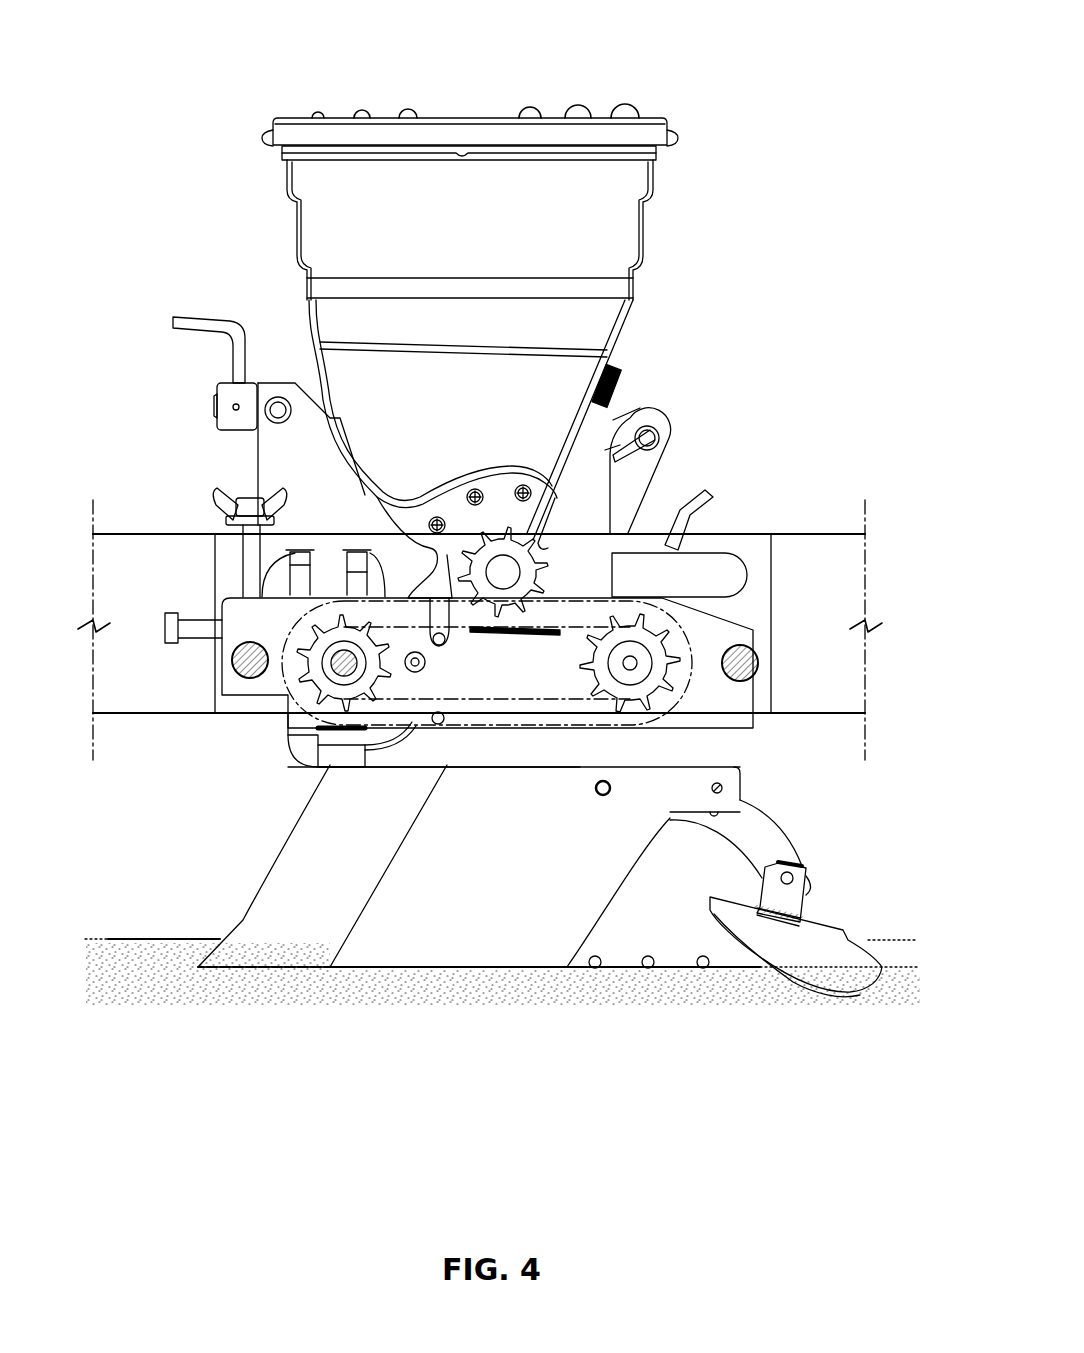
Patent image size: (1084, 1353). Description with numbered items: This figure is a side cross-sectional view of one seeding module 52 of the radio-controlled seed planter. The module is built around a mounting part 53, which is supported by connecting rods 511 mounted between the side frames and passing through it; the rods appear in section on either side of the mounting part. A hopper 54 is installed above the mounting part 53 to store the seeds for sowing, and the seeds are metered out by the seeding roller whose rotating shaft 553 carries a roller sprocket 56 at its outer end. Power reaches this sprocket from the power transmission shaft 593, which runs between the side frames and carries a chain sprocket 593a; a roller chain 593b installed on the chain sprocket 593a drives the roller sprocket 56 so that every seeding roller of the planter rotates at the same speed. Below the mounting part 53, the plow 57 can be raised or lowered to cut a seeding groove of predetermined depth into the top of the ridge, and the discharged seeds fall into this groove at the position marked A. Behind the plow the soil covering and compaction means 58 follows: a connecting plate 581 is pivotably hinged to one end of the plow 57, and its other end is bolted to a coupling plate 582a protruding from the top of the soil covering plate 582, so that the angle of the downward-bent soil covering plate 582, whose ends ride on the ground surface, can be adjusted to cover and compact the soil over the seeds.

The seeding module 52 is at (703, 110).
The mounting part 53 is at (730, 611).
The hopper 54 is at (287, 171).
The roller sprocket 56 is at (507, 570).
The plow 57 is at (290, 940).
The soil covering and compaction means 58 is at (760, 977).
The connecting rod 511 is at (232, 672).
The rotating shaft 553 is at (538, 542).
The connecting plate 581 is at (767, 817).
The soil covering plate 582 is at (829, 978).
The coupling plate 582a is at (793, 897).
The power transmission shaft 593 is at (320, 735).
The chain sprocket 593a is at (345, 660).
The roller chain 593b is at (287, 677).
The seeding position A is at (593, 970).